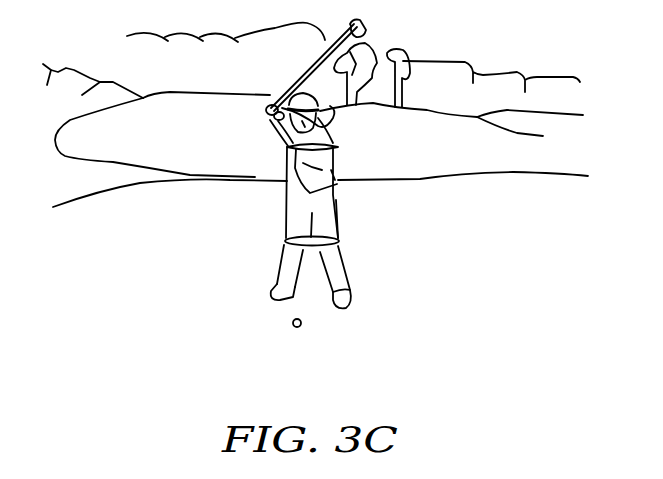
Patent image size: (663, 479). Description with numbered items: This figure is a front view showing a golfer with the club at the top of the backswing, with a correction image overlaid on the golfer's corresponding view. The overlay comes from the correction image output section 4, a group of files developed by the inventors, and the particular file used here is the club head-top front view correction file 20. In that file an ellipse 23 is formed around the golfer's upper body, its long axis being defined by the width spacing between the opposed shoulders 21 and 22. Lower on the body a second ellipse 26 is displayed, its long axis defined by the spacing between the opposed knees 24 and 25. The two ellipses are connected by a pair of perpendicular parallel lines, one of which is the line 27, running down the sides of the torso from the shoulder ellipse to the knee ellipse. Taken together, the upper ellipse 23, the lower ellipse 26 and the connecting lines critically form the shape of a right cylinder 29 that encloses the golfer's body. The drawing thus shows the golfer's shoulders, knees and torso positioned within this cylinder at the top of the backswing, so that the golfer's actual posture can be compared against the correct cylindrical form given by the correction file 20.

The correction image output section 4 is at (270, 322).
The club head-top front view correction file 20 is at (323, 323).
The shoulder 21 is at (340, 143).
The shoulder 22 is at (285, 158).
The ellipse 23 is at (266, 132).
The knee 24 is at (347, 248).
The knee 25 is at (285, 247).
The second ellipse 26 is at (287, 232).
The perpendicular parallel line 27 is at (343, 172).
The right cylinder 29 is at (343, 206).